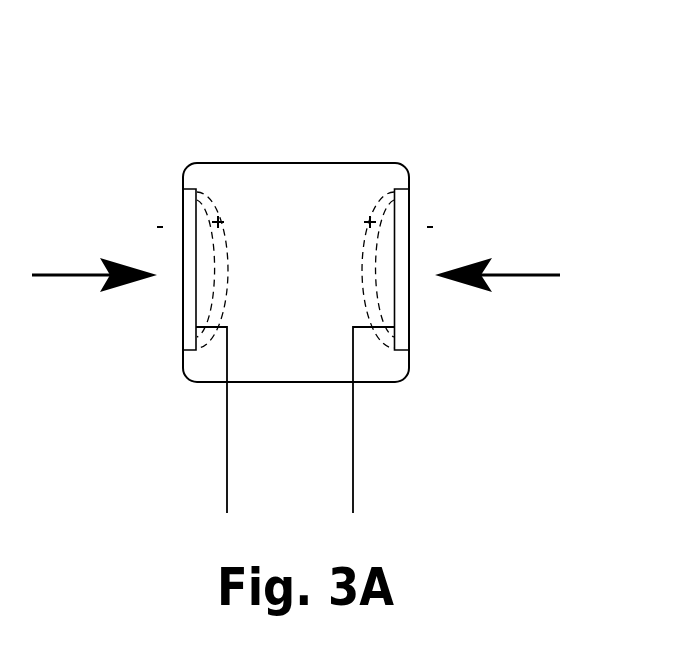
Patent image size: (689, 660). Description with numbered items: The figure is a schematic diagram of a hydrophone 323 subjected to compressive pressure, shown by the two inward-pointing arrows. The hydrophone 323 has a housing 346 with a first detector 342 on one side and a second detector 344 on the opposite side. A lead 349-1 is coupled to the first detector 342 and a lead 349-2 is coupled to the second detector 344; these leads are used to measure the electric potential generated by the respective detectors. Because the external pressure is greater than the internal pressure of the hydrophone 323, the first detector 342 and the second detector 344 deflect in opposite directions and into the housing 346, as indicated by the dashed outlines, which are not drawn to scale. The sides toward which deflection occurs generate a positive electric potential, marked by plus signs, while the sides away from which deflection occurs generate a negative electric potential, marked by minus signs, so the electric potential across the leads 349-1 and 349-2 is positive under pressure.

The hydrophone 323 is at (188, 70).
The housing 346 is at (373, 163).
The first detector 342 is at (183, 199).
The second detector 344 is at (408, 199).
The lead 349-1 is at (227, 455).
The lead 349-2 is at (353, 455).